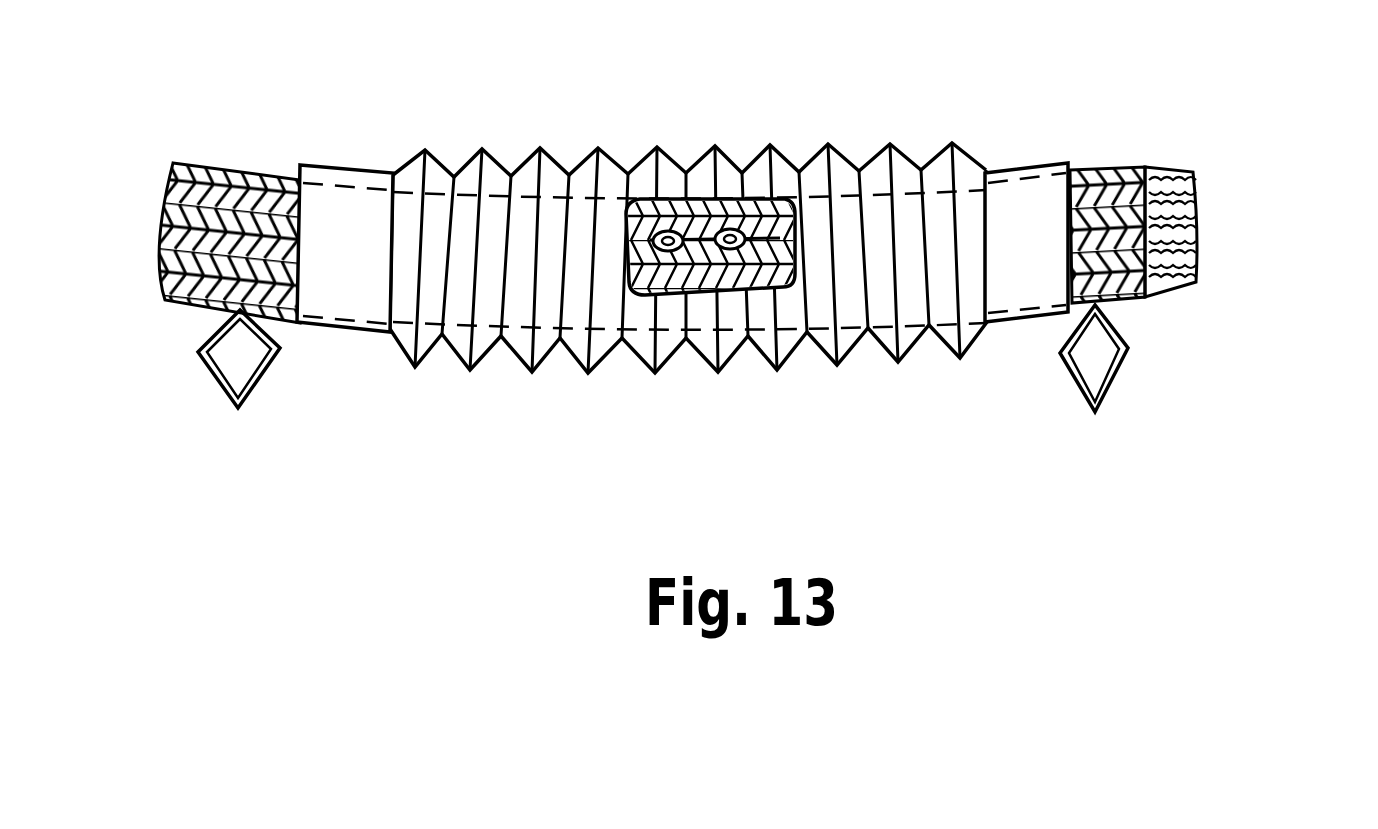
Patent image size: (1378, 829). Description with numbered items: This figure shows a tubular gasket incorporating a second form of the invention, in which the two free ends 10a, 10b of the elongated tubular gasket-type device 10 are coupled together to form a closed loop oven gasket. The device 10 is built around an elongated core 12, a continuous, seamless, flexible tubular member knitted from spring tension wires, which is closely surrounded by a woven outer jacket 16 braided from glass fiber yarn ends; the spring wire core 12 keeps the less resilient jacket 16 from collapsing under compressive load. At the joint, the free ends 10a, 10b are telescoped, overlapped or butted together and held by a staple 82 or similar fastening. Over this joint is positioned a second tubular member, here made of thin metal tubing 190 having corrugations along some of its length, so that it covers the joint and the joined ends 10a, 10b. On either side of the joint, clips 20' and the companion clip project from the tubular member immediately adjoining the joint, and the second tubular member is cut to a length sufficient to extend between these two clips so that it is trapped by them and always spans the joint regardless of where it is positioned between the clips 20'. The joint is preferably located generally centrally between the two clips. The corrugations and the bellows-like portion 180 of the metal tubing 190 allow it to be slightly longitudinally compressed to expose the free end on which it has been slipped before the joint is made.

The tubular gasket-type device 10 is at (1100, 166).
The free end 10a is at (808, 203).
The free end 10b is at (648, 165).
The elongated core 12 is at (1190, 210).
The woven outer jacket 16 is at (1142, 172).
The clip 20' is at (204, 412).
The staple 82 is at (740, 205).
The bellows portion 180 is at (600, 372).
The thin metal tubing 190 is at (333, 166).